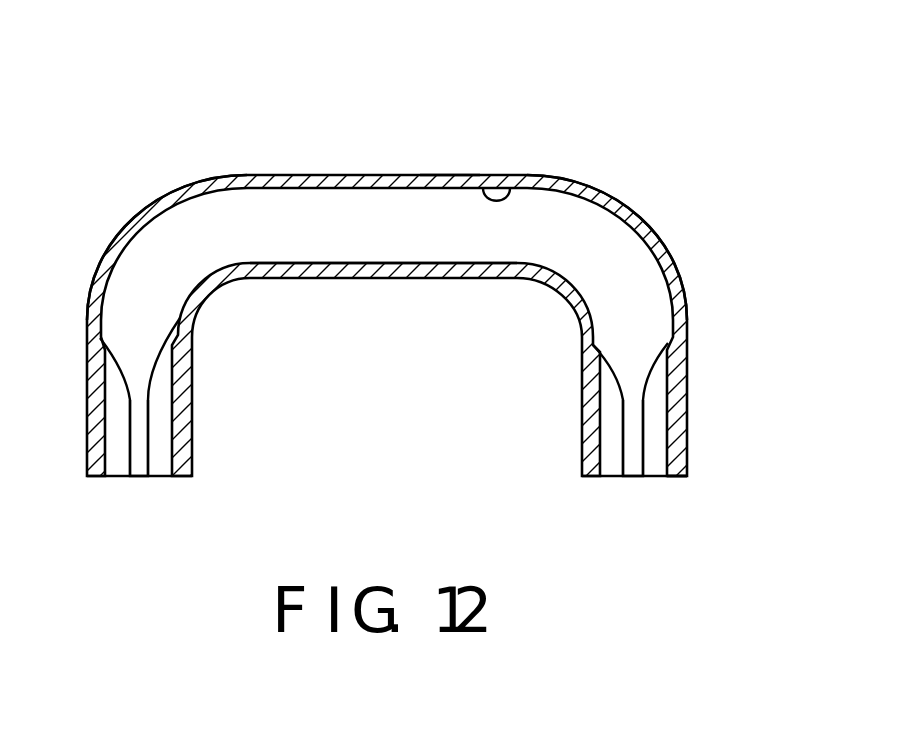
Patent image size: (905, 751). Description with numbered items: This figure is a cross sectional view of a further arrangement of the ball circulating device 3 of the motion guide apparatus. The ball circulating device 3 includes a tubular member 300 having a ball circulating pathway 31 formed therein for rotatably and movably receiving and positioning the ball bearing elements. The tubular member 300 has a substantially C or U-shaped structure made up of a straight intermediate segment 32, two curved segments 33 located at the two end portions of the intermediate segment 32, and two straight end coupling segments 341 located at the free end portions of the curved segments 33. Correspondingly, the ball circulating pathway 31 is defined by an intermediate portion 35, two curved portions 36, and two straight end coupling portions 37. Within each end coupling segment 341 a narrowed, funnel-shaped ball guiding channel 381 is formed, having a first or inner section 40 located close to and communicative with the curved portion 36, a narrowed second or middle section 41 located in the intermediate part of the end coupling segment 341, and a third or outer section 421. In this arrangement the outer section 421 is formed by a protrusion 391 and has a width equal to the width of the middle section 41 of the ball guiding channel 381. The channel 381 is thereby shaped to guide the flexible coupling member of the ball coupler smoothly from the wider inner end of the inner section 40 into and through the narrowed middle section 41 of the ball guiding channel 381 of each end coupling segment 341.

The ball circulating device 3 is at (305, 164).
The tubular member 300 is at (363, 163).
The ball circulating pathway 31 is at (512, 195).
The intermediate segment 32 is at (450, 162).
The curved segment 33 is at (642, 208).
The intermediate portion 35 is at (386, 247).
The curved portion 36 is at (206, 198).
The end coupling portion 37 is at (170, 404).
The first or inner section 40 is at (135, 355).
The second or middle section 41 is at (637, 410).
The end coupling segment 341 is at (698, 471).
The ball guiding channel 381 is at (636, 485).
The protrusion 391 is at (608, 380).
The third or outer section 421 is at (138, 466).